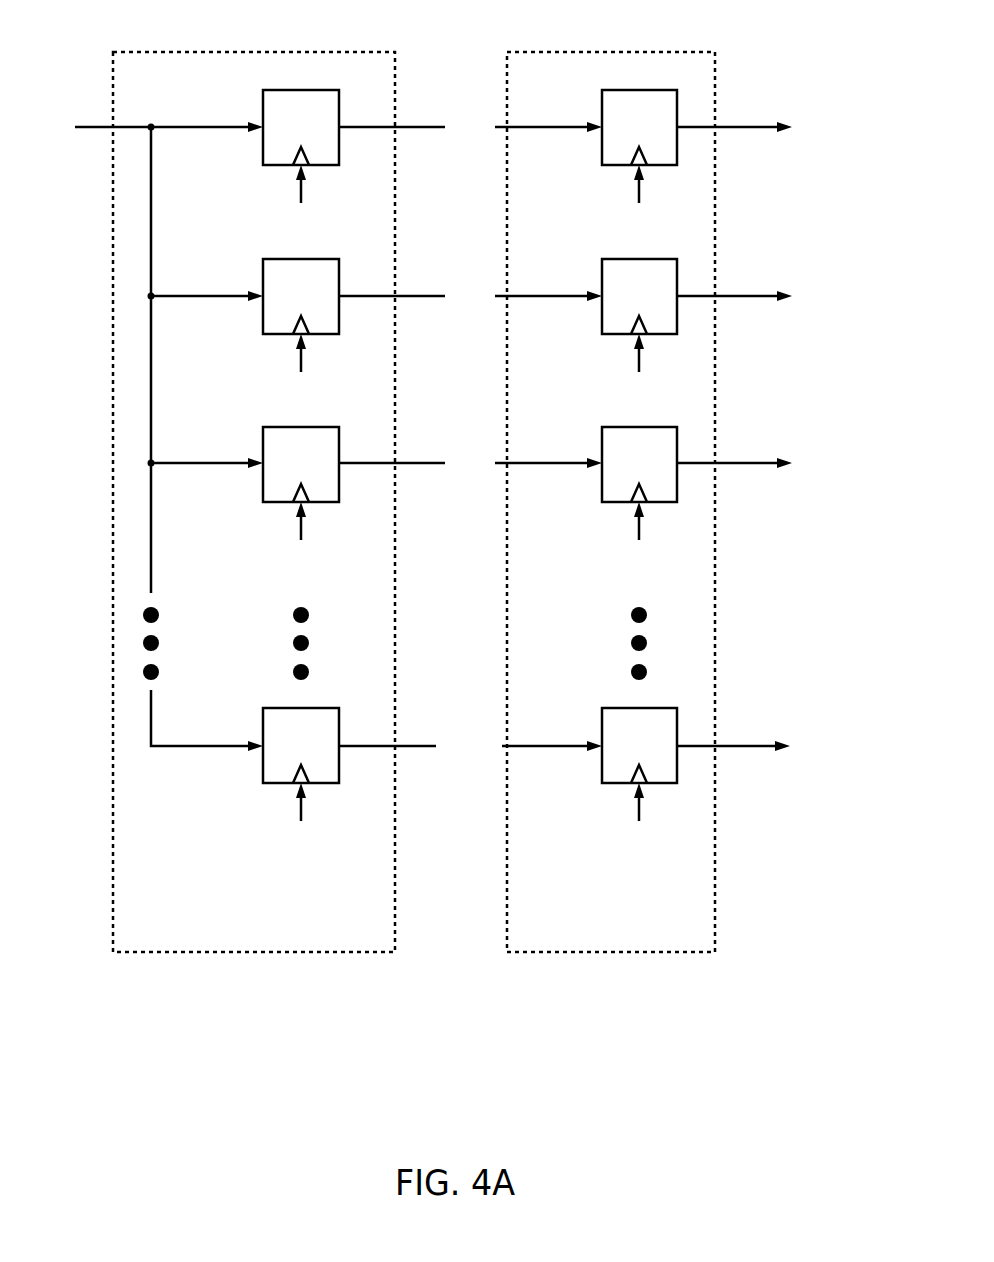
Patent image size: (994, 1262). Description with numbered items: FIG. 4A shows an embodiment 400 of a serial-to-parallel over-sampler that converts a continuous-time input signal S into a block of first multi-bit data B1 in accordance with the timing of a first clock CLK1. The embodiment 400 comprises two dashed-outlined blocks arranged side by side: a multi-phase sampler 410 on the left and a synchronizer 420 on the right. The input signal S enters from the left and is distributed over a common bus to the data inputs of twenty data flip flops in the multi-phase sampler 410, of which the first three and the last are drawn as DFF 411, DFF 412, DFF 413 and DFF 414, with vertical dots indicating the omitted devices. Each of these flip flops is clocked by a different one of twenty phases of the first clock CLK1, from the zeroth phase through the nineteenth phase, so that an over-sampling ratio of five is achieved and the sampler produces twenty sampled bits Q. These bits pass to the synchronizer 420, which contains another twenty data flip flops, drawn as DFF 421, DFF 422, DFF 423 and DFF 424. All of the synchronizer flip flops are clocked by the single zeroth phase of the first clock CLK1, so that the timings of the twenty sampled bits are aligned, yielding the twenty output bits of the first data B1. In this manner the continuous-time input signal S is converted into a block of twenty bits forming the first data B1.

The embodiment of S/P over-sampler 400 is at (266, 1027).
The multi-phase sampler 410 is at (273, 52).
The DFF 411 is at (263, 107).
The DFF 412 is at (263, 276).
The DFF 413 is at (263, 444).
The DFF 414 is at (263, 725).
The synchronizer 420 is at (630, 52).
The DFF 421 is at (602, 107).
The DFF 422 is at (602, 276).
The DFF 423 is at (602, 444).
The DFF 424 is at (602, 725).